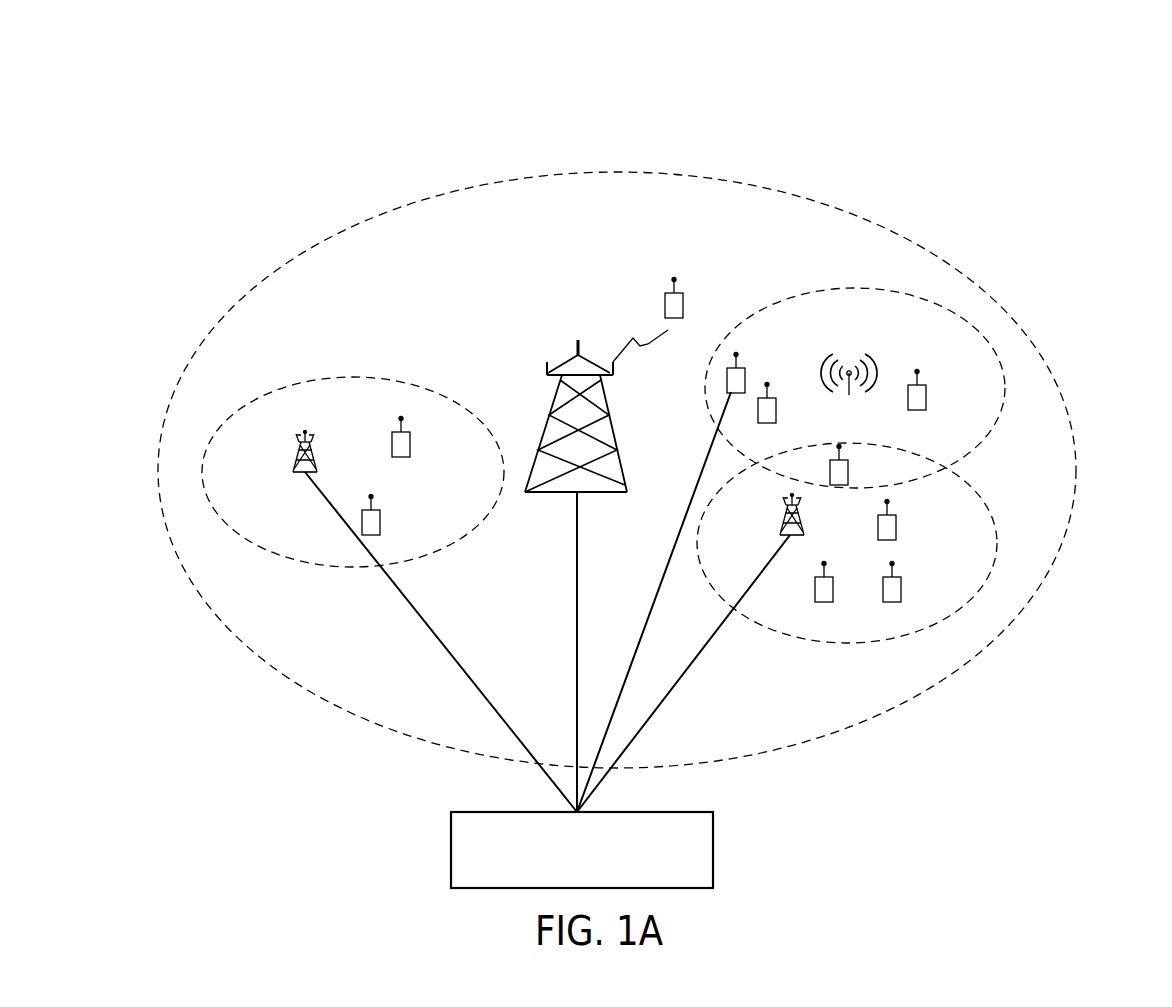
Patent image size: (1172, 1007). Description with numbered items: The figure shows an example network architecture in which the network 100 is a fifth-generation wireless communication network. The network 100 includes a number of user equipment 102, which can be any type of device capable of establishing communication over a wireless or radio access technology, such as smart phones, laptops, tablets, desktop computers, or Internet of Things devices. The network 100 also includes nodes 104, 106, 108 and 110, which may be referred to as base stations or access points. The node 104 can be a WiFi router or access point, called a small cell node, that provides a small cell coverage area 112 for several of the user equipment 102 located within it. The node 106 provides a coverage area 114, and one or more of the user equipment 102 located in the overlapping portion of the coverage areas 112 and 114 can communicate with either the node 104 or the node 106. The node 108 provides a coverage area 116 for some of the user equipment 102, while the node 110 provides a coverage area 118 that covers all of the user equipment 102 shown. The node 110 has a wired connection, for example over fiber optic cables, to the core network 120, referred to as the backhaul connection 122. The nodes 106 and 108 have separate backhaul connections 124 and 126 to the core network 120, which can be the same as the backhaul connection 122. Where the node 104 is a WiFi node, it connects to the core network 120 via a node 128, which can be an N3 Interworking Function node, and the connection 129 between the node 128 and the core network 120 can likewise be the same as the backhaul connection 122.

The network 100 is at (1078, 108).
The user equipment 102 is at (683, 310).
The node 104 is at (836, 368).
The node 106 is at (805, 530).
The node 108 is at (300, 472).
The node 110 is at (612, 430).
The coverage area 112 is at (988, 437).
The coverage area 114 is at (992, 505).
The coverage area 116 is at (450, 546).
The coverage area 118 is at (1077, 487).
The core network 120 is at (713, 848).
The backhaul connection 122 is at (577, 540).
The backhaul connection 124 is at (695, 660).
The backhaul connection 126 is at (470, 675).
The node 128 is at (727, 380).
The connection 129 is at (655, 602).